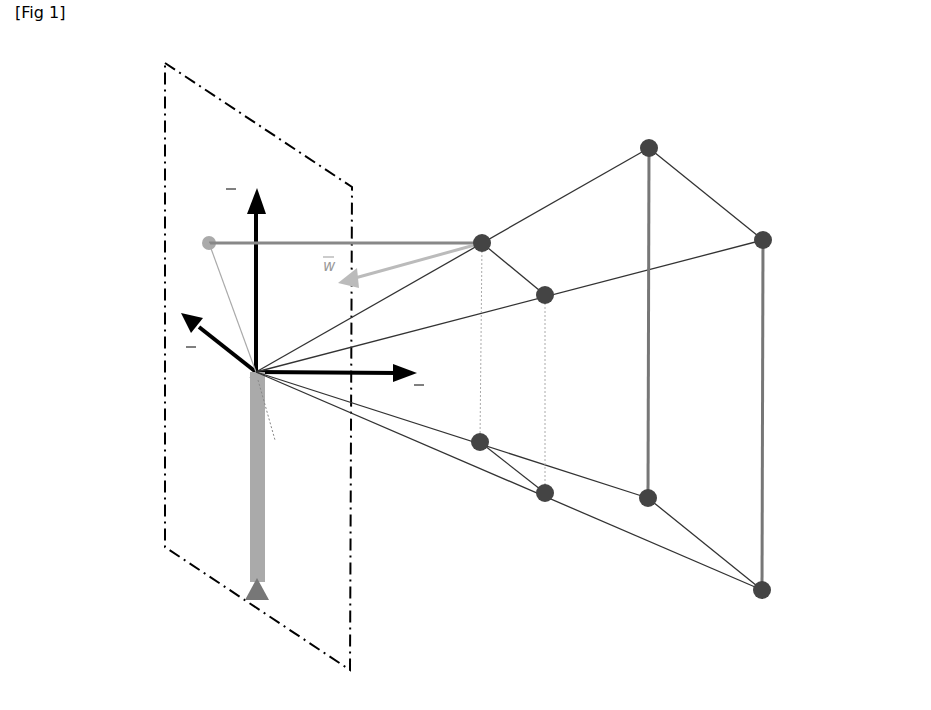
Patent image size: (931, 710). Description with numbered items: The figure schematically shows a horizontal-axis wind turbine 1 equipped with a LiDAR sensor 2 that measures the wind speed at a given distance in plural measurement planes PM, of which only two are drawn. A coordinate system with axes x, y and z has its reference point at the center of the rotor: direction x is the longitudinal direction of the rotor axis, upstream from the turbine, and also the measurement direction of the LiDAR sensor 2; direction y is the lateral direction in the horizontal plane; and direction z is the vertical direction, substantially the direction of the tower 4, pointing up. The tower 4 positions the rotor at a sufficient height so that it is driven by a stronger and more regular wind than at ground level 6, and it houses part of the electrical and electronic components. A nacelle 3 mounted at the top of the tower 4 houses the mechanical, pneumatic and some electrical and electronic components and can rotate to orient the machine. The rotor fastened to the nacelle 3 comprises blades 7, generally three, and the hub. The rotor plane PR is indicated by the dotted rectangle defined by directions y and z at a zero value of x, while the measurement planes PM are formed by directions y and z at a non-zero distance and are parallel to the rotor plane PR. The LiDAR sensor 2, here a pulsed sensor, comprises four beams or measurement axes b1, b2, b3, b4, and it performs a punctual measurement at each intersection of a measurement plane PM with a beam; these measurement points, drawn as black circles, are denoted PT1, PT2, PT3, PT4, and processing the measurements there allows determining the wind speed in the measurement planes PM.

The horizontal-axis wind turbine 1 is at (202, 366).
The LiDAR sensor 2 is at (238, 365).
The nacelle 3 is at (246, 389).
The tower 4 is at (246, 471).
The ground level 6 is at (246, 580).
The blades 7 is at (273, 438).
The rotor plane PR is at (180, 170).
The measurement point PT1 is at (473, 236).
The measurement point PT2 is at (552, 286).
The measurement point PT3 is at (535, 504).
The measurement point PT4 is at (470, 442).
The beam b1 is at (557, 192).
The beam b2 is at (712, 253).
The beam b3 is at (498, 483).
The beam b4 is at (620, 490).
The measurement planes PM is at (530, 410).